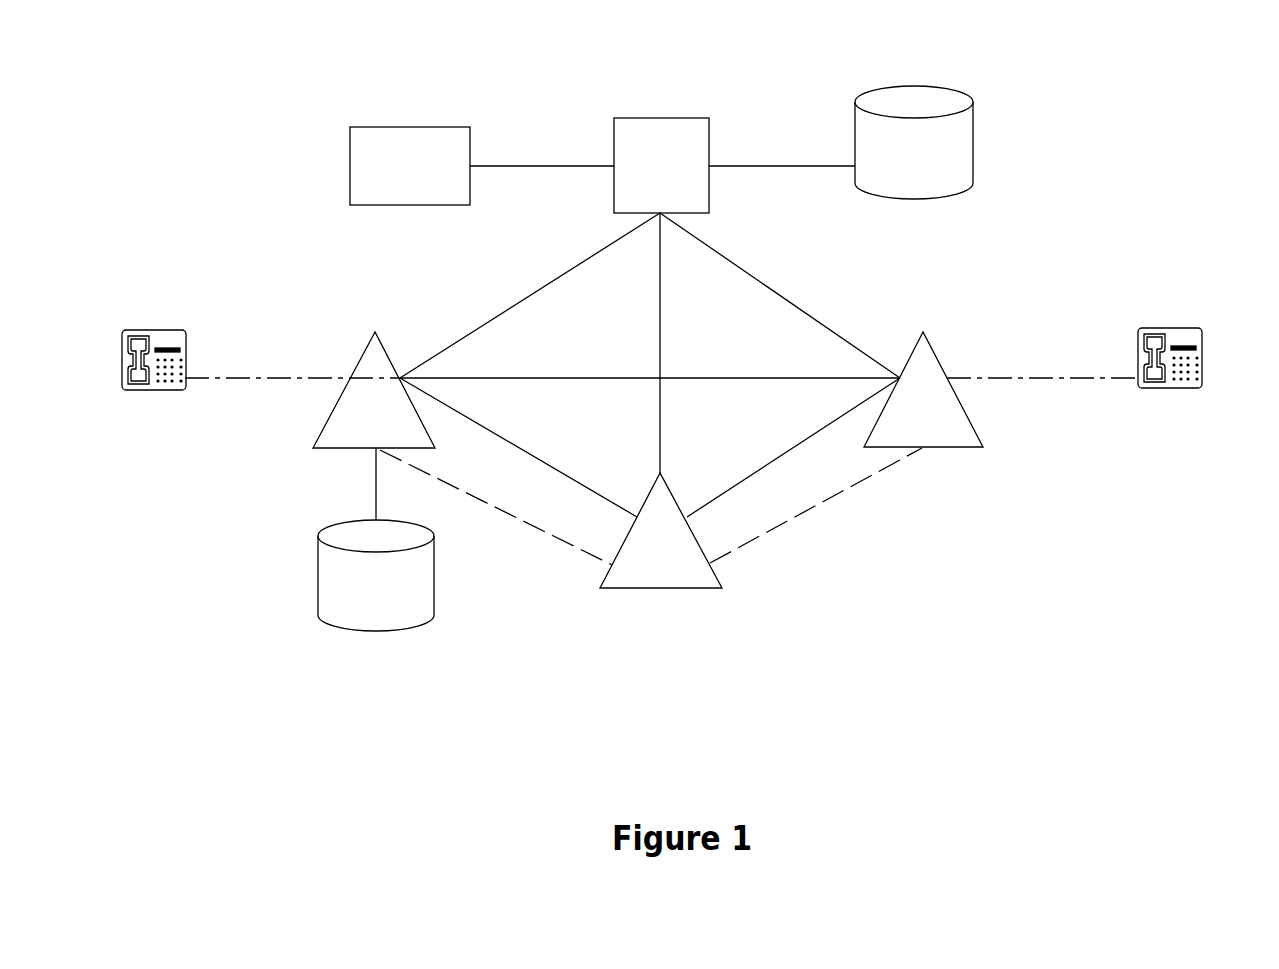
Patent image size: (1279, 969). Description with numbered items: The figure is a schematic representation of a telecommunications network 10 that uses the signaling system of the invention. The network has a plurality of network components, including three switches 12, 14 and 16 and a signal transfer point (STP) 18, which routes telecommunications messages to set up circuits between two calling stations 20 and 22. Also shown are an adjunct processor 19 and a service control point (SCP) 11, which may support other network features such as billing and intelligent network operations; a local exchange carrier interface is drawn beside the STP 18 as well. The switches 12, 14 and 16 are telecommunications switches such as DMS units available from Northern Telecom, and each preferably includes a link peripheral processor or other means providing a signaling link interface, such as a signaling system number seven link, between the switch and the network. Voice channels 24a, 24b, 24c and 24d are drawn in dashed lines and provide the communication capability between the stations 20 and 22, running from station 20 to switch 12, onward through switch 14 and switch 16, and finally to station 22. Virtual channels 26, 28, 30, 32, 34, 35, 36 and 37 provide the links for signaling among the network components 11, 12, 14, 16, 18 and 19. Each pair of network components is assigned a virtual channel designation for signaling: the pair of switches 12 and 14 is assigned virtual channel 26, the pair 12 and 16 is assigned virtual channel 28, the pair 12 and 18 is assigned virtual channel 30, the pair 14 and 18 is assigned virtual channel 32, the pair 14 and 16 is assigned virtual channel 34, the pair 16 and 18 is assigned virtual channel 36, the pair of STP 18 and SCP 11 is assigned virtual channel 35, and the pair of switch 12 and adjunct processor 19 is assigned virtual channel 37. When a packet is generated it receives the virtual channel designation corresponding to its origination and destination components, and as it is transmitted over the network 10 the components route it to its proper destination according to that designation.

The telecommunications network 10 is at (1118, 138).
The service control point 11 is at (920, 83).
The switch 12 is at (362, 352).
The switch 14 is at (667, 588).
The switch 16 is at (950, 447).
The signal transfer point 18 is at (662, 118).
The adjunct processor 19 is at (377, 632).
The calling station 20 is at (162, 332).
The calling station 22 is at (1175, 388).
The voice channel 24a is at (233, 378).
The voice channel 24b is at (515, 518).
The voice channel 24c is at (837, 493).
The voice channel 24d is at (1043, 378).
The virtual channel 26 is at (560, 470).
The virtual channel 28 is at (508, 375).
The virtual channel 30 is at (530, 295).
The virtual channel 32 is at (662, 307).
The virtual channel 34 is at (755, 470).
The virtual channel 35 is at (770, 166).
The virtual channel 36 is at (783, 295).
The virtual channel 37 is at (376, 492).